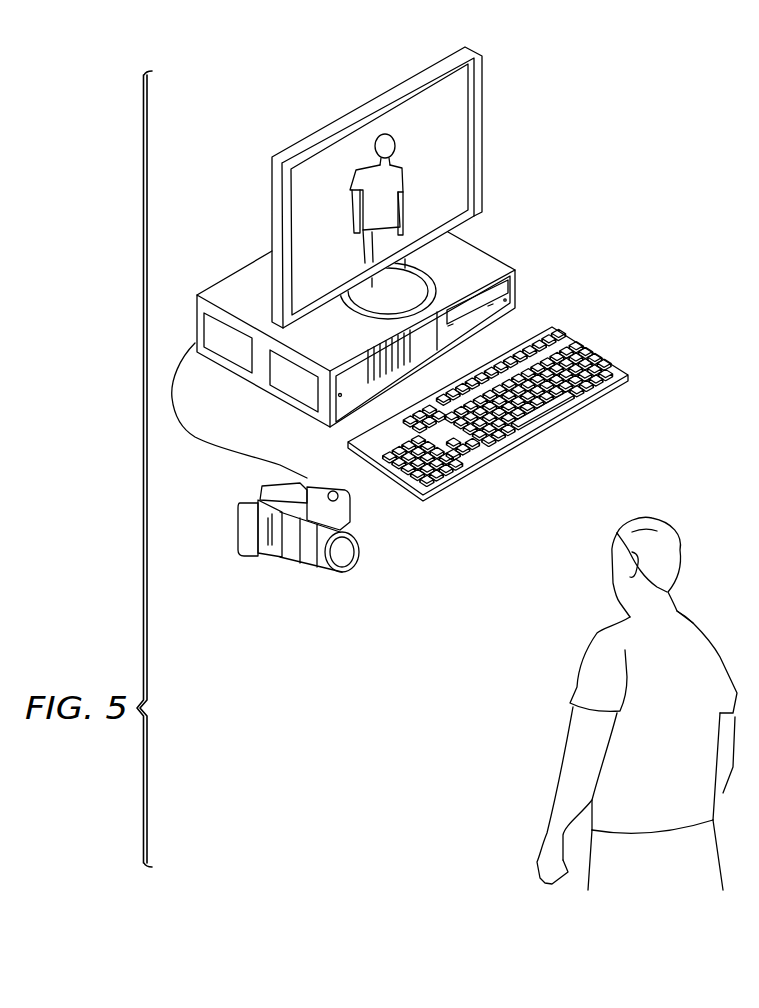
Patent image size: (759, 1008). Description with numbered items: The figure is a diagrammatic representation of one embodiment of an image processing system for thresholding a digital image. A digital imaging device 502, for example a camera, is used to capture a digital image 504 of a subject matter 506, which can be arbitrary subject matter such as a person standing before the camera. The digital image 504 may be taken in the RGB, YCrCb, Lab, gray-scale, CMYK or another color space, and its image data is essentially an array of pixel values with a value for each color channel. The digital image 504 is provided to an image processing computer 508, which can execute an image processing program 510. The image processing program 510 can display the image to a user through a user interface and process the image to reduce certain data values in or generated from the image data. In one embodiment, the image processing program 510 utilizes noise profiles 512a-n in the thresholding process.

The digital imaging device 502 is at (238, 527).
The digital image 504 is at (362, 158).
The subject matter 506 is at (720, 610).
The image processing computer 508 is at (520, 290).
The image processing program 510 is at (295, 388).
The noise profiles 512a-n is at (228, 335).